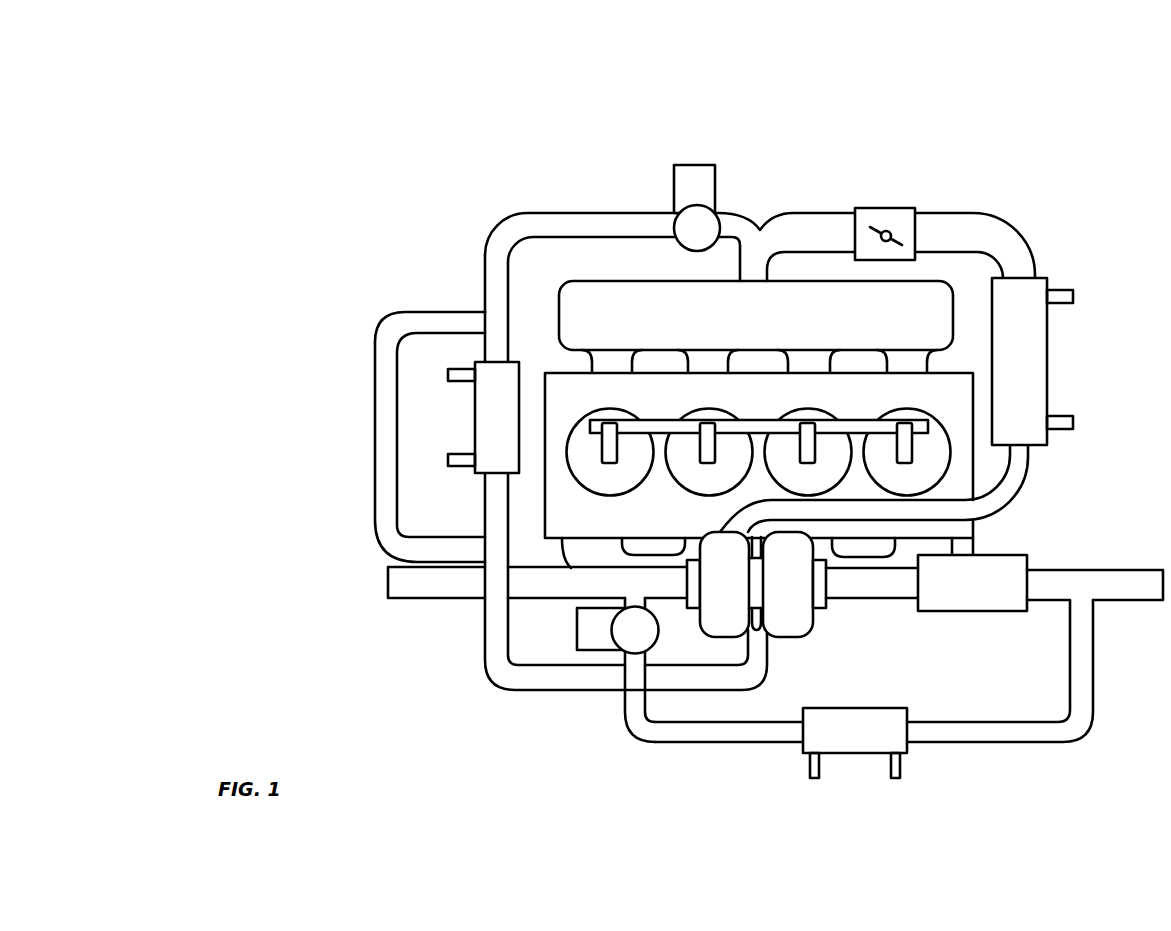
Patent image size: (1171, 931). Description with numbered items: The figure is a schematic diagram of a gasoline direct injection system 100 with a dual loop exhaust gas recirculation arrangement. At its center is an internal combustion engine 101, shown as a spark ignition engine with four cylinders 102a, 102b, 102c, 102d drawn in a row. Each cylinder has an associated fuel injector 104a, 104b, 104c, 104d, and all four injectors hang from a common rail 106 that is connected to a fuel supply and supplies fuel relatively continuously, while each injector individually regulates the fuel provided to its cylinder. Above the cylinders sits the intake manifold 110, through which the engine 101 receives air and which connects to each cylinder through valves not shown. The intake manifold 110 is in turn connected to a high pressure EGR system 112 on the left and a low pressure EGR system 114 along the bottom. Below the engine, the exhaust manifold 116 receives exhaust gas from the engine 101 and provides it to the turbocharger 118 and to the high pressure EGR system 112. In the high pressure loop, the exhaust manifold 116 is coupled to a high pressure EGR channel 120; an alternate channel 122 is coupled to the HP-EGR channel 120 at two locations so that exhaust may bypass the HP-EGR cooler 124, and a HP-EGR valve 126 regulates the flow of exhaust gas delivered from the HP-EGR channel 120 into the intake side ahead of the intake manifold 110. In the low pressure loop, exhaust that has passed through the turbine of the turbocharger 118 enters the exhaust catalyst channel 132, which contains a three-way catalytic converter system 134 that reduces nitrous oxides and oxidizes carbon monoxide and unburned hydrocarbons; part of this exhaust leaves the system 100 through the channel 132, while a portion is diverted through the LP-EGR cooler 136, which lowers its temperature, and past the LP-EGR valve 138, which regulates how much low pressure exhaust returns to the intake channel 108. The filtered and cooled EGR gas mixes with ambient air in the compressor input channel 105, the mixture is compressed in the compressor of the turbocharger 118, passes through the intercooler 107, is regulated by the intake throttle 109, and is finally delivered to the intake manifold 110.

The gasoline direct injection system 100 is at (436, 106).
The internal combustion engine 101 is at (960, 387).
The cylinder 102a is at (607, 496).
The cylinder 102b is at (705, 496).
The cylinder 102c is at (832, 491).
The cylinder 102d is at (932, 491).
The fuel injector 104a is at (609, 423).
The fuel injector 104b is at (708, 423).
The fuel injector 104c is at (808, 423).
The fuel injector 104d is at (904, 423).
The compressor input channel 105 is at (388, 583).
The common rail 106 is at (928, 427).
The intercooler 107 is at (1048, 363).
The intake channel 108 is at (1028, 240).
The intake throttle 109 is at (887, 208).
The intake manifold 110 is at (778, 332).
The high pressure EGR system 112 is at (370, 409).
The low pressure EGR system 114 is at (731, 778).
The exhaust manifold 116 is at (952, 552).
The turbocharger 118 is at (788, 583).
The high pressure EGR channel 120 is at (477, 622).
The alternate channel 122 is at (373, 400).
The HP-EGR cooler 124 is at (497, 418).
The HP-EGR valve 126 is at (698, 228).
The exhaust catalyst channel 132 is at (870, 585).
The three-way catalytic converter system 134 is at (972, 582).
The LP-EGR cooler 136 is at (855, 730).
The LP-EGR valve 138 is at (575, 632).